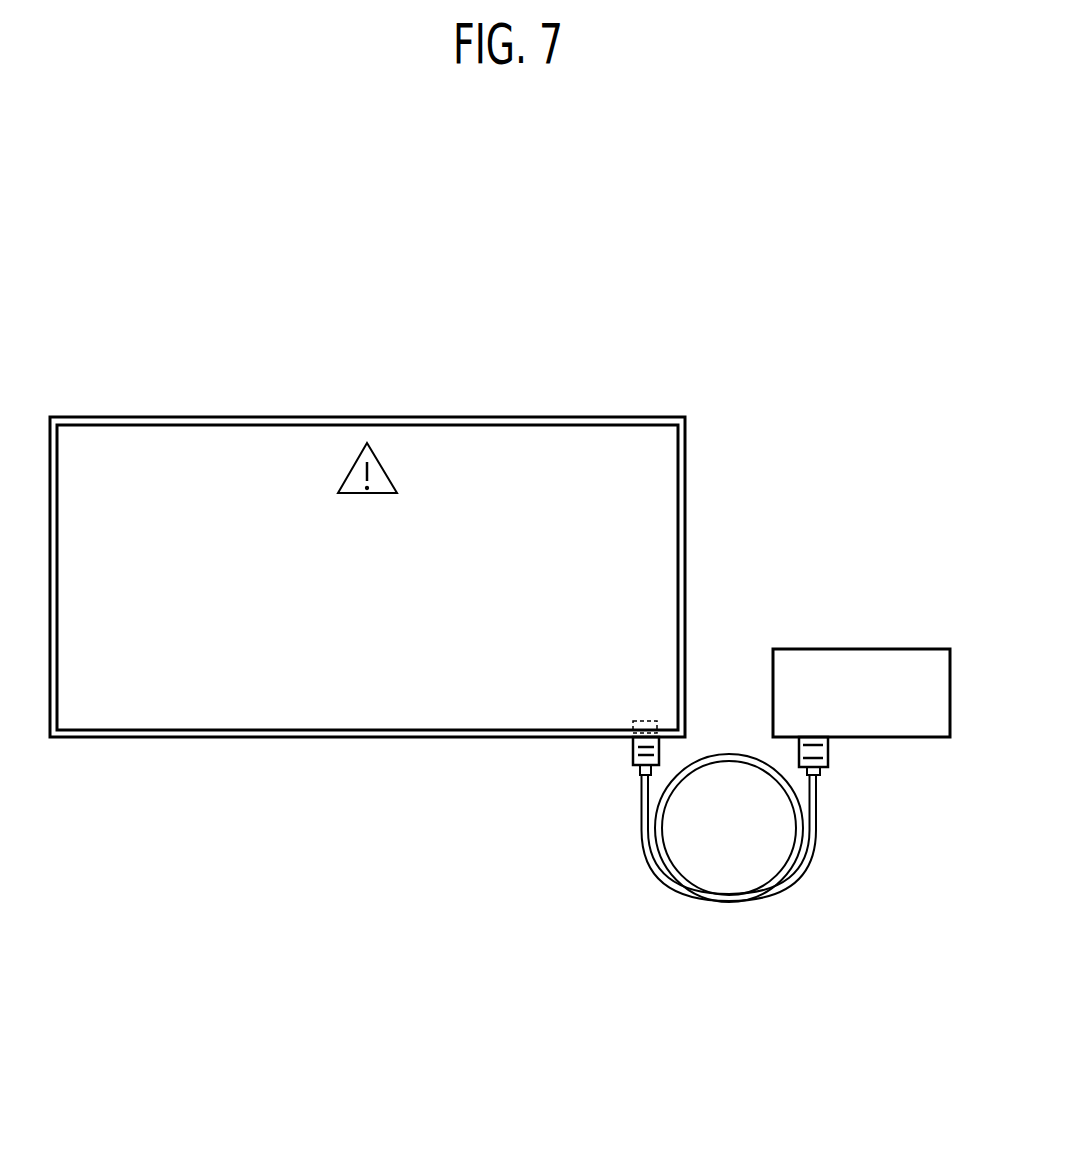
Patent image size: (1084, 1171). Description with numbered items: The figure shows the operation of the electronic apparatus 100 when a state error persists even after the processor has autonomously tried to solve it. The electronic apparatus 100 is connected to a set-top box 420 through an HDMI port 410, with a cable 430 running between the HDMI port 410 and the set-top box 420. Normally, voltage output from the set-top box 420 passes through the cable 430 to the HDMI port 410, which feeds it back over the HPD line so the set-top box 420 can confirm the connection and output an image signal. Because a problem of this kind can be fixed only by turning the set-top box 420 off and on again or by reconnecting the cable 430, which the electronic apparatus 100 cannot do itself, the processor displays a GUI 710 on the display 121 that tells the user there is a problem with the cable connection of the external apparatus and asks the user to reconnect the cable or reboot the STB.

The electronic apparatus 100 is at (253, 417).
The display 121 is at (367, 579).
The GUI 710 is at (352, 696).
The HDMI port 410 is at (640, 737).
The set-top box 420 is at (860, 649).
The cable 430 is at (743, 905).